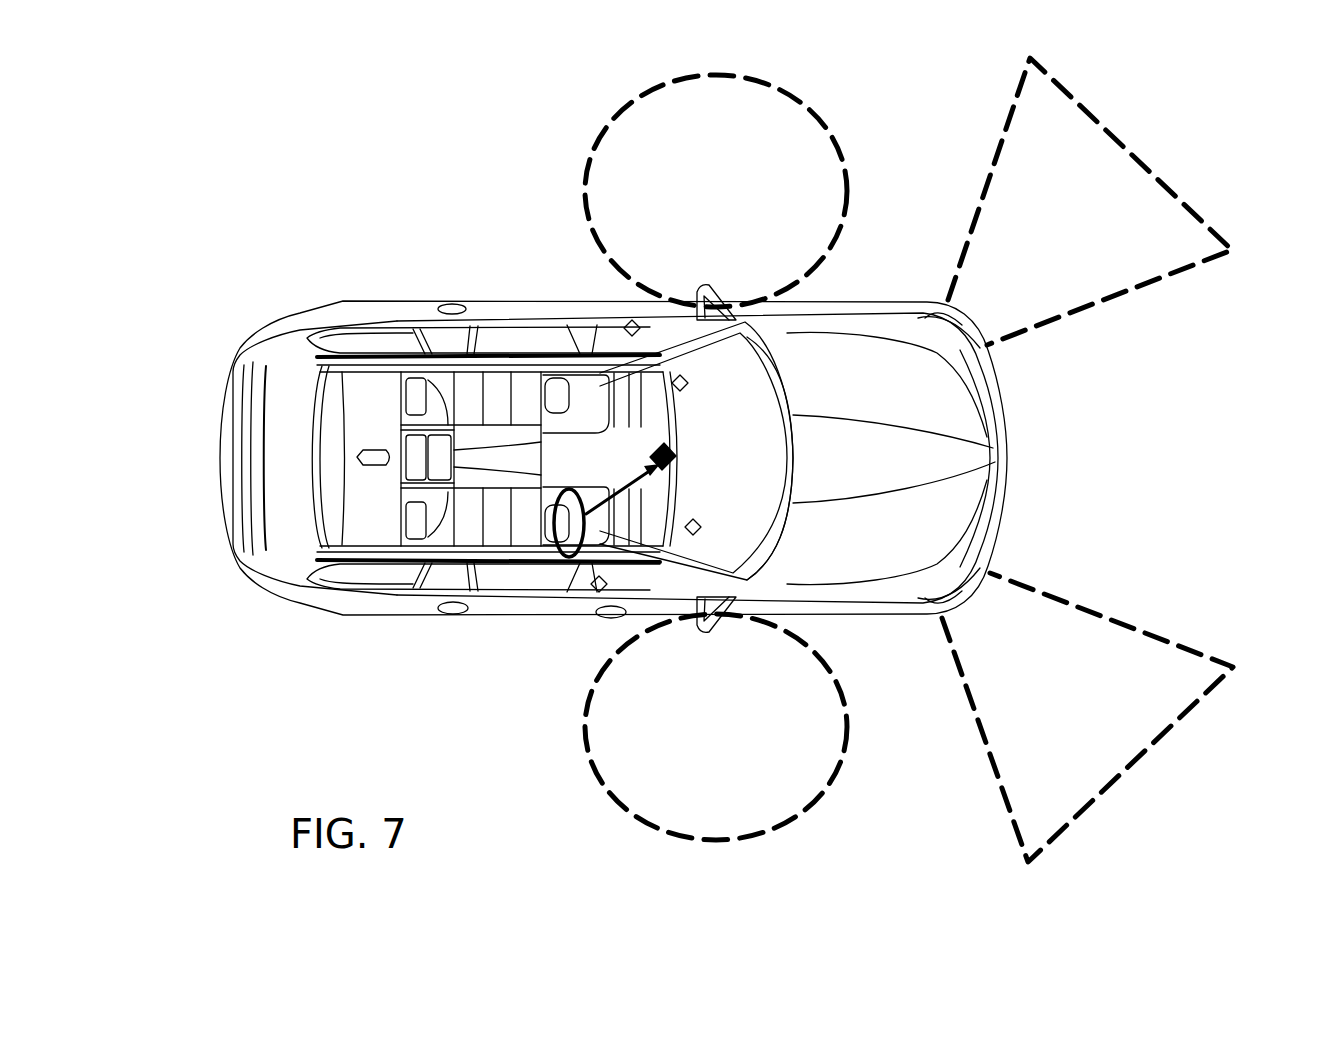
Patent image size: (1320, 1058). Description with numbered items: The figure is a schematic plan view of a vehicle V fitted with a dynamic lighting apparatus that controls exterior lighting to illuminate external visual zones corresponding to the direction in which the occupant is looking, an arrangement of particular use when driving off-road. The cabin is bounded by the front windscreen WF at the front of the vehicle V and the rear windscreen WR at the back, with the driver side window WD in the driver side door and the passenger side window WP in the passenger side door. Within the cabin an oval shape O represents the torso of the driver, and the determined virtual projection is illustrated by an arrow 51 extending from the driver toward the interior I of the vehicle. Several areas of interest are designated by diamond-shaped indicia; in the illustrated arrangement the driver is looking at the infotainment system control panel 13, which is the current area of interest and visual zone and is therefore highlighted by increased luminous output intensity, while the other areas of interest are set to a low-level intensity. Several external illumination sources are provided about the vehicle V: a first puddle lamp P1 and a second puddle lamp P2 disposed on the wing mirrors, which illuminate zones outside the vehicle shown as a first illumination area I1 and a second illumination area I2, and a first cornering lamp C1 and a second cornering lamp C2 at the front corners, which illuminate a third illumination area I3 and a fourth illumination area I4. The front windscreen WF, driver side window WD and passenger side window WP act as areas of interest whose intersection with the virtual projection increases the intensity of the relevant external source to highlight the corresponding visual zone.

The vehicle V is at (292, 199).
The driver side window WD is at (626, 320).
The vehicle interior I is at (595, 445).
The rear windscreen WR is at (330, 457).
The front windscreen WF is at (737, 473).
The occupant O is at (555, 538).
The passenger side window WP is at (597, 592).
The infotainment system control panel 13 is at (678, 456).
The line of sight arrow 51 is at (620, 497).
The second puddle lamp P2 is at (733, 280).
The first puddle lamp P1 is at (733, 636).
The second cornering lamp C2 is at (940, 312).
The first cornering lamp C1 is at (940, 602).
The second illumination area I2 is at (815, 118).
The first illumination area I1 is at (812, 797).
The fourth illumination area I4 is at (1130, 152).
The third illumination area I3 is at (1070, 598).